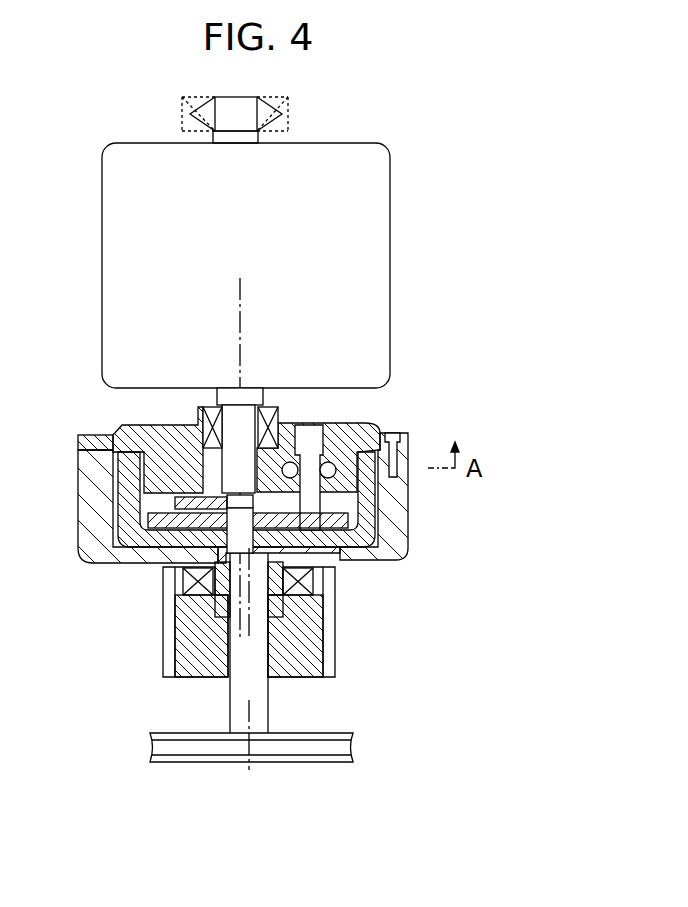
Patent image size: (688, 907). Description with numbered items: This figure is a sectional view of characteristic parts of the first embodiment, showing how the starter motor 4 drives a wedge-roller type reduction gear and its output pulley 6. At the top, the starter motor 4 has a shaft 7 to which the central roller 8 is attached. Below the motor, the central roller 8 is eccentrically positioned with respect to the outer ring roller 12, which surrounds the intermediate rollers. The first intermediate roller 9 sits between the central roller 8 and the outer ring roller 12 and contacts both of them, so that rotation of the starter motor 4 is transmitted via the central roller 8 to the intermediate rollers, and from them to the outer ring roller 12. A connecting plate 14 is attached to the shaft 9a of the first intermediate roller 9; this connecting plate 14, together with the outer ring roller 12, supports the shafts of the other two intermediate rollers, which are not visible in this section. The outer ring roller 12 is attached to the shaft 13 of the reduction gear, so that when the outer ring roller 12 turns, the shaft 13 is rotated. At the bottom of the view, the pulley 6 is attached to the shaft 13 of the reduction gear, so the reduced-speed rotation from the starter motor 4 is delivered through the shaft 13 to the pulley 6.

The starter motor 4 is at (382, 167).
The shaft 7 is at (247, 98).
The central roller 8 is at (248, 432).
The first intermediate roller 9 is at (367, 503).
The shaft 9a is at (312, 445).
The outer ring roller 12 is at (370, 523).
The connecting plate 14 is at (340, 557).
The shaft 13 is at (255, 643).
The pulley 6 is at (333, 733).